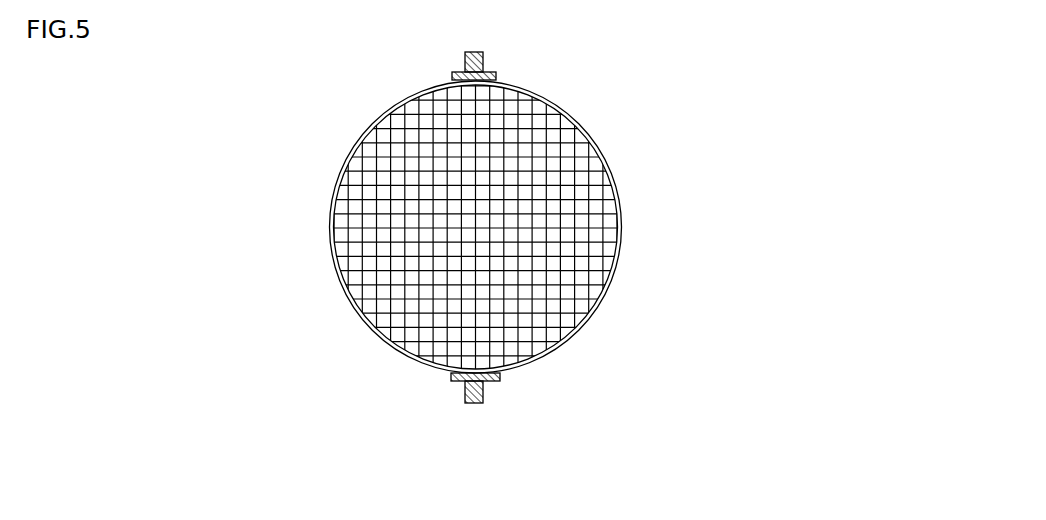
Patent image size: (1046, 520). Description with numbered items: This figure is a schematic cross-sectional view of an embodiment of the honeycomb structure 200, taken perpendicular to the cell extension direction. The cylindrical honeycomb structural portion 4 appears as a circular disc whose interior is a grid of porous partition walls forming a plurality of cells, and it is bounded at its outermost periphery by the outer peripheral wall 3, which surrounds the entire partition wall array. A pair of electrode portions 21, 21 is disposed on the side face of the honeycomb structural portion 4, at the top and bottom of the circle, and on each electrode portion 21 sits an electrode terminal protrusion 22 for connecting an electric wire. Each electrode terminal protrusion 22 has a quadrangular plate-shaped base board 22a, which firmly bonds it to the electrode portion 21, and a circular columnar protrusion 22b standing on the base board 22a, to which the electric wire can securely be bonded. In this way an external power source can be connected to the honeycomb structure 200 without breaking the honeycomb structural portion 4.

The honeycomb structure 200 is at (865, 83).
The outer peripheral wall 3 is at (568, 347).
The honeycomb structural portion 4 is at (624, 221).
The electrode portion 21 is at (478, 84).
The electrode terminal protrusion 22 is at (471, 264).
The base board 22a is at (462, 382).
The protrusion 22b is at (465, 393).